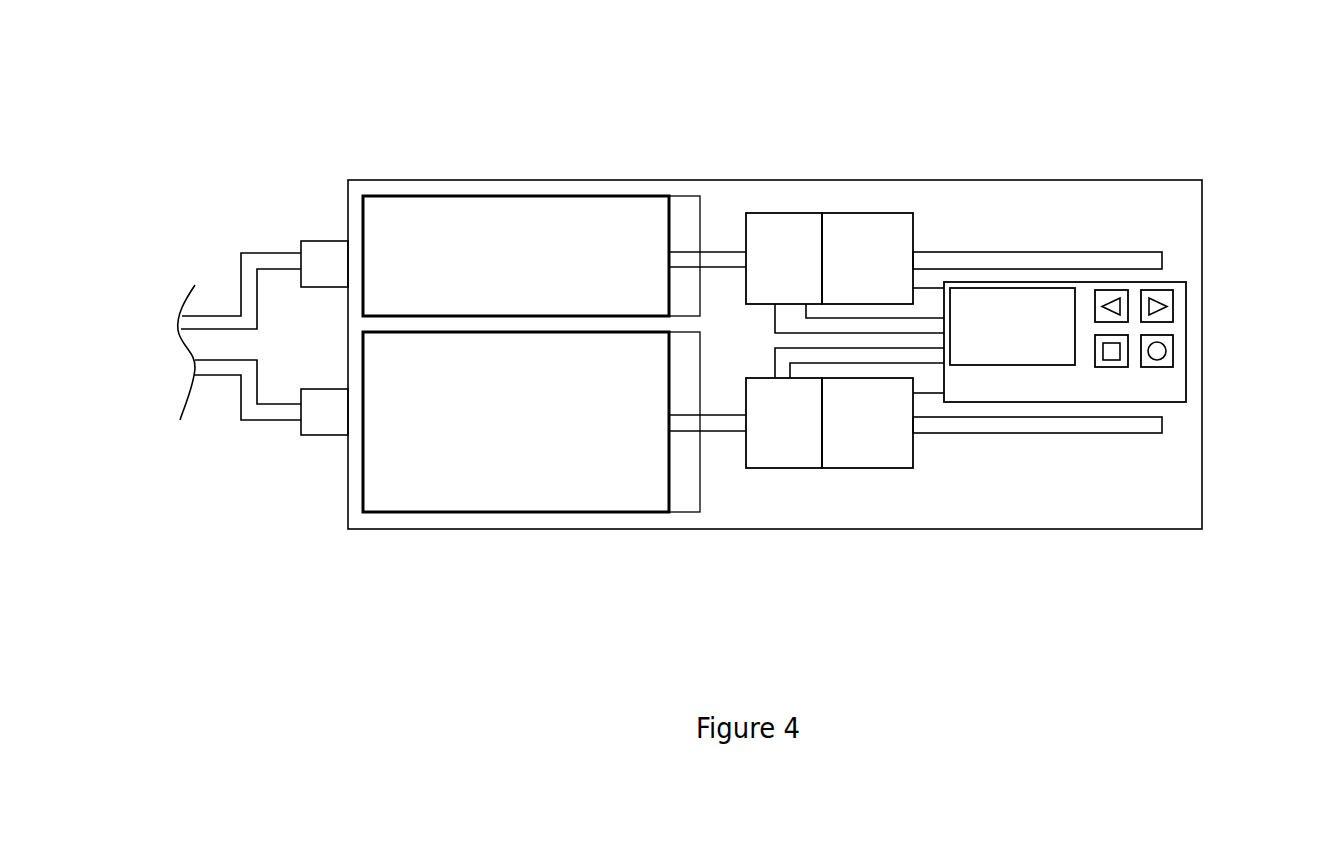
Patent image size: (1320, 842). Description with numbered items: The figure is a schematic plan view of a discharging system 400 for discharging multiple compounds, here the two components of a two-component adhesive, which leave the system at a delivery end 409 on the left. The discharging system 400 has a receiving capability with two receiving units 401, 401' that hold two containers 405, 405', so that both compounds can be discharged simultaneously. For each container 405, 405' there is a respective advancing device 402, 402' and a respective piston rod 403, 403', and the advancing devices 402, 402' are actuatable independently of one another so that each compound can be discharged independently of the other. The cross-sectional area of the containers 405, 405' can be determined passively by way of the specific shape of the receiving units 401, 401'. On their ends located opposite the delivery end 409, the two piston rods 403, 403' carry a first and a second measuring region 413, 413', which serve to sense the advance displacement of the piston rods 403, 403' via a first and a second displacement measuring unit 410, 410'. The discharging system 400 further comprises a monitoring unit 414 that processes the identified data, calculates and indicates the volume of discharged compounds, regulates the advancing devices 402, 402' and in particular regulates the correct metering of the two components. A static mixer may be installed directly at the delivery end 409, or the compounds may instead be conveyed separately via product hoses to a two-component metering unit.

The discharging system 400 is at (242, 118).
The receiving unit 401 is at (531, 203).
The receiving unit 401' is at (531, 491).
The advancing device 402 is at (845, 212).
The advancing device 402' is at (845, 499).
The piston rod 403 is at (699, 179).
The piston rod 403' is at (705, 532).
The container 405 is at (516, 202).
The container 405' is at (516, 492).
The delivery end 409 is at (215, 459).
The first displacement measuring unit 410 is at (909, 197).
The second displacement measuring unit 410' is at (918, 514).
The first measuring region 413 is at (1037, 180).
The second measuring region 413' is at (1040, 533).
The monitoring unit 414 is at (1183, 285).